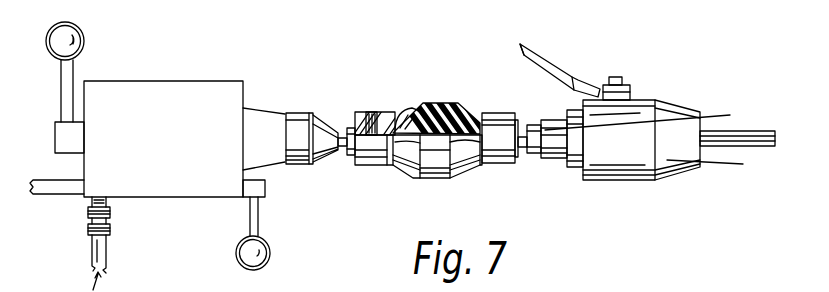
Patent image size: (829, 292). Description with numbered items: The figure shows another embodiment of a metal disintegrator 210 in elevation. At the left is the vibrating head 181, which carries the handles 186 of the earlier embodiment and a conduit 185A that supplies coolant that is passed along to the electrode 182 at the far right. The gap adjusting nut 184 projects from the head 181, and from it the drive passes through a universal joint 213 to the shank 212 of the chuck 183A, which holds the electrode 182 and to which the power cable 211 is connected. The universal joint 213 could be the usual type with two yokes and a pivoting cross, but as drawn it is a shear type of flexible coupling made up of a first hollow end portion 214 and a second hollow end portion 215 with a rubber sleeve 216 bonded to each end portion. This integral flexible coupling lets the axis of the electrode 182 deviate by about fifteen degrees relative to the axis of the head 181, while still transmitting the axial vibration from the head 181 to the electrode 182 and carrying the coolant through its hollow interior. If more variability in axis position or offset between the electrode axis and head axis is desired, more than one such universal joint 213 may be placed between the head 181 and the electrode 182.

The vibrating head 181 is at (180, 80).
The handles 186 is at (85, 32).
The conduit 185A is at (90, 247).
The metal disintegrator 210 is at (272, 70).
The gap adjusting nut 184 is at (293, 112).
The first hollow end portion 214 is at (376, 112).
The universal joint 213 is at (402, 127).
The rubber sleeve 216 is at (441, 101).
The second hollow end portion 215 is at (495, 166).
The shank 212 is at (523, 148).
The chuck 183A is at (650, 100).
The power cable 211 is at (557, 60).
The electrode 182 is at (742, 130).